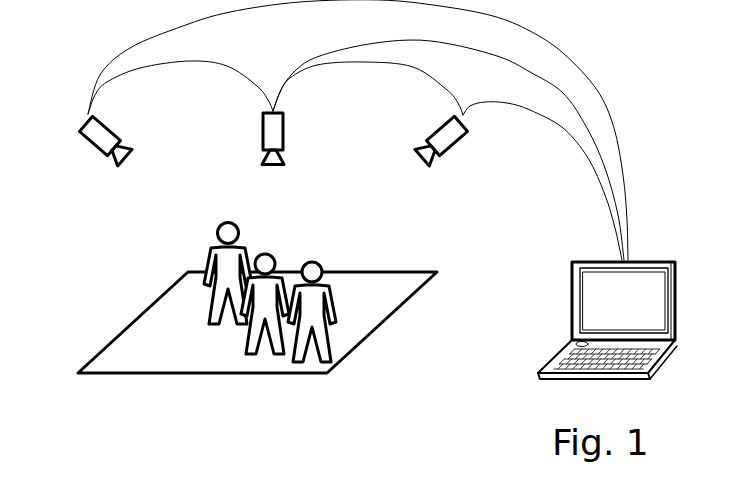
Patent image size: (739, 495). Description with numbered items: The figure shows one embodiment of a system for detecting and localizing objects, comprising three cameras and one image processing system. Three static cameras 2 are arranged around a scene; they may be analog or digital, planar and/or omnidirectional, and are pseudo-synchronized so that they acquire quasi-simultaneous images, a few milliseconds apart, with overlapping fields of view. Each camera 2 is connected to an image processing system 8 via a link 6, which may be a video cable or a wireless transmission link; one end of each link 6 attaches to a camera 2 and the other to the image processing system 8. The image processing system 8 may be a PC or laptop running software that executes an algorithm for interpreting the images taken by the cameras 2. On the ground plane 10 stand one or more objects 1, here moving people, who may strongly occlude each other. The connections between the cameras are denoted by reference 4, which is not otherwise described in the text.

The objects 1 is at (307, 263).
The cameras 2 is at (100, 133).
The camera synchronization links 4 is at (275, 88).
The link 6 is at (358, 130).
The image processing system 8 is at (658, 297).
The ground plane 10 is at (117, 367).